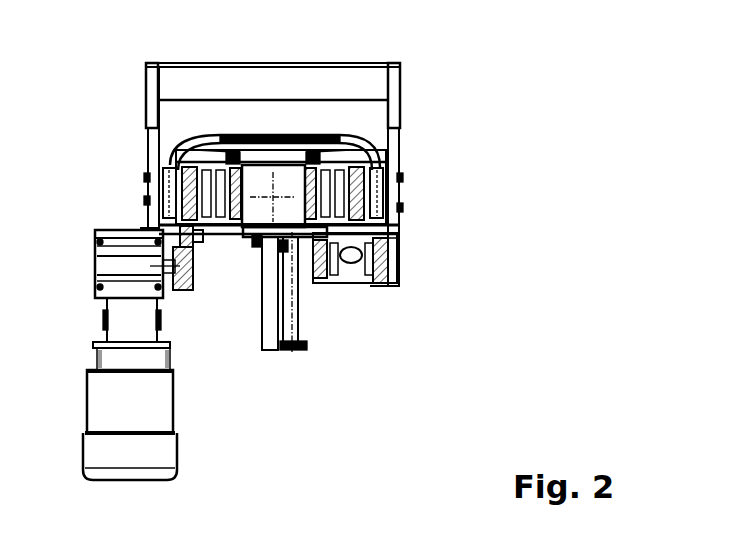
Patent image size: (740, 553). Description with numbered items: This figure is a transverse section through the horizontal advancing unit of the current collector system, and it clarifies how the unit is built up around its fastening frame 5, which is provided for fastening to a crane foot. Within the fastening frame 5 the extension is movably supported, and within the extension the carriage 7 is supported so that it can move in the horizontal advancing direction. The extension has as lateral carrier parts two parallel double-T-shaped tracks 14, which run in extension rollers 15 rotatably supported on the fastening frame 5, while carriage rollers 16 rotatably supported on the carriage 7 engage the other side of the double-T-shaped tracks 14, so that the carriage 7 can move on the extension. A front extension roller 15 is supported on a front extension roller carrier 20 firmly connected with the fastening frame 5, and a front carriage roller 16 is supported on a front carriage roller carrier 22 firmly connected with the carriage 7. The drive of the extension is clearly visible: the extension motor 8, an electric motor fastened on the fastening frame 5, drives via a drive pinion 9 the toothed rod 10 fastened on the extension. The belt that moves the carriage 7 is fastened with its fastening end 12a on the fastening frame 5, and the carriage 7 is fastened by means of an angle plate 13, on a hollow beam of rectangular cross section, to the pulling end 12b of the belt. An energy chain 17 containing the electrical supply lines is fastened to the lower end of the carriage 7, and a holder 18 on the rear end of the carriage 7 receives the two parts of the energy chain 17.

The fastening frame 5 is at (146, 80).
The carriage 7 is at (258, 215).
The extension motor 8 is at (177, 435).
The drive pinion 9 is at (190, 298).
The toothed rod 10 is at (202, 246).
The fastening end 12a is at (378, 265).
The pulling end 12b is at (330, 262).
The angle plate 13 is at (308, 245).
The double-T-shaped track 14 is at (182, 167).
The extension roller 15 is at (163, 178).
The carriage roller 16 is at (218, 162).
The energy chain 17 is at (265, 352).
The holder 18 is at (292, 352).
The front extension roller carrier 20 is at (150, 199).
The front carriage roller carrier 22 is at (232, 152).